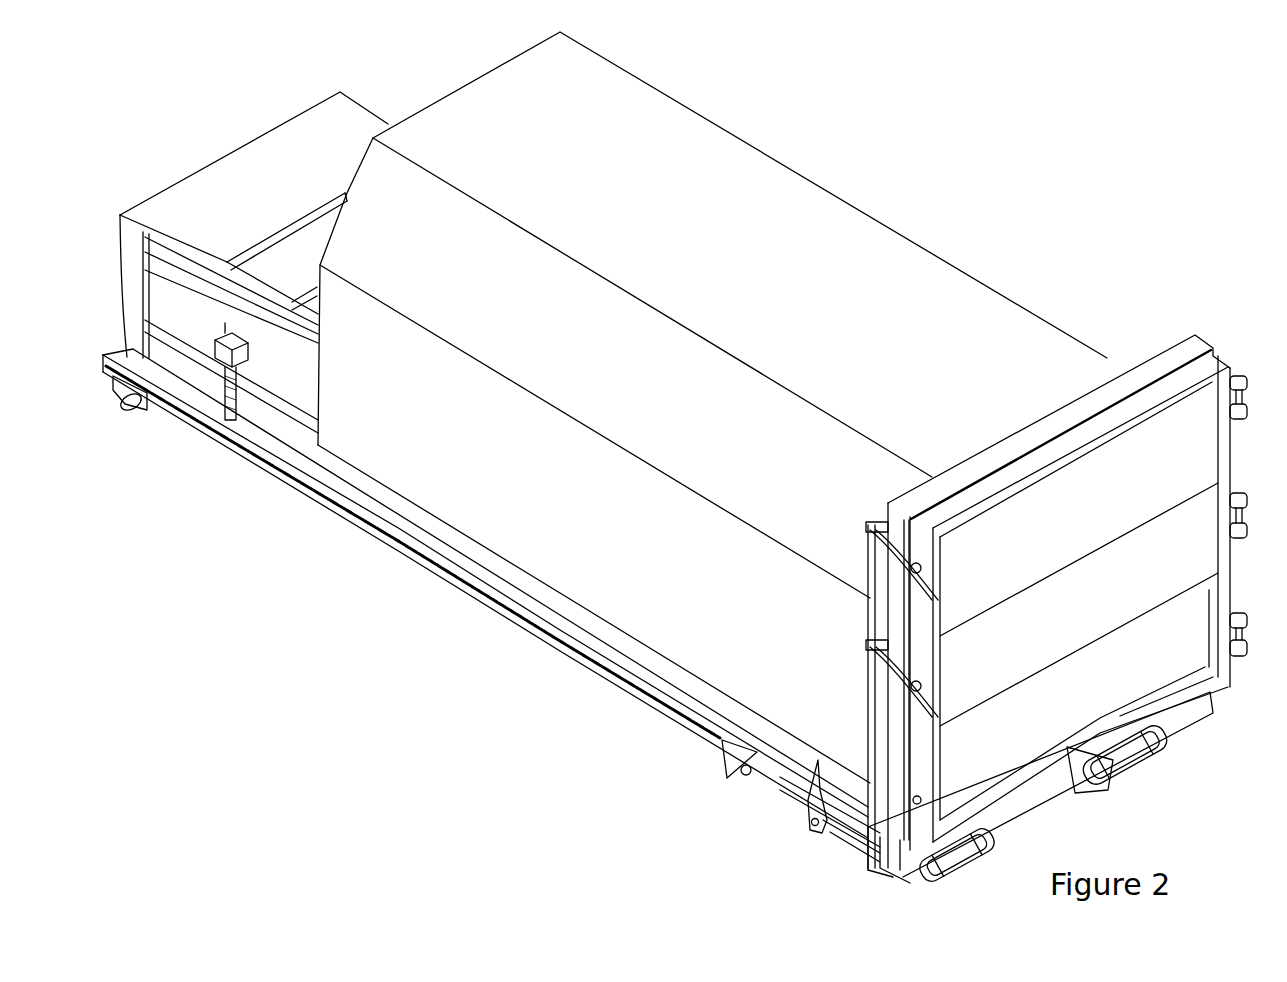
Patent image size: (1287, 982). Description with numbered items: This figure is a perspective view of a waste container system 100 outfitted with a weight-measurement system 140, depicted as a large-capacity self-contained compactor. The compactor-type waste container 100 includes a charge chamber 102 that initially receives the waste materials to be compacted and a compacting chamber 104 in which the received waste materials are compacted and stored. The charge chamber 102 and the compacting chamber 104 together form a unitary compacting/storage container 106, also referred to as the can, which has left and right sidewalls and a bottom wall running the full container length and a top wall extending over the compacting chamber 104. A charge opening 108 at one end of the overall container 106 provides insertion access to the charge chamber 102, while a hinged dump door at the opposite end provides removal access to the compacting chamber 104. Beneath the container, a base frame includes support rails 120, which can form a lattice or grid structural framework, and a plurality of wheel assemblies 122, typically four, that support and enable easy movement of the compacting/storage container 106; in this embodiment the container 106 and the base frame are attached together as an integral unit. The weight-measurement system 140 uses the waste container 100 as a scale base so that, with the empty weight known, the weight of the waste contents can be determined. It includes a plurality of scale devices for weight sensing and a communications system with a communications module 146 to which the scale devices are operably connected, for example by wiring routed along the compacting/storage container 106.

The waste container system 100 is at (968, 194).
The charge chamber 102 is at (321, 230).
The compacting chamber 104 is at (986, 282).
The compacting/storage container 106 is at (788, 114).
The charge opening 108 is at (299, 208).
The support rails 120 is at (523, 632).
The wheel assemblies 122 is at (130, 414).
The weight-measurement system 140 is at (166, 484).
The communications module 146 is at (259, 370).